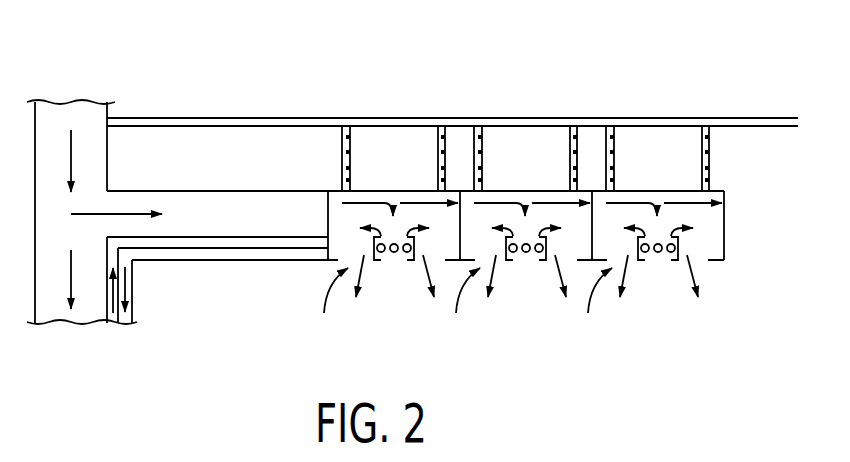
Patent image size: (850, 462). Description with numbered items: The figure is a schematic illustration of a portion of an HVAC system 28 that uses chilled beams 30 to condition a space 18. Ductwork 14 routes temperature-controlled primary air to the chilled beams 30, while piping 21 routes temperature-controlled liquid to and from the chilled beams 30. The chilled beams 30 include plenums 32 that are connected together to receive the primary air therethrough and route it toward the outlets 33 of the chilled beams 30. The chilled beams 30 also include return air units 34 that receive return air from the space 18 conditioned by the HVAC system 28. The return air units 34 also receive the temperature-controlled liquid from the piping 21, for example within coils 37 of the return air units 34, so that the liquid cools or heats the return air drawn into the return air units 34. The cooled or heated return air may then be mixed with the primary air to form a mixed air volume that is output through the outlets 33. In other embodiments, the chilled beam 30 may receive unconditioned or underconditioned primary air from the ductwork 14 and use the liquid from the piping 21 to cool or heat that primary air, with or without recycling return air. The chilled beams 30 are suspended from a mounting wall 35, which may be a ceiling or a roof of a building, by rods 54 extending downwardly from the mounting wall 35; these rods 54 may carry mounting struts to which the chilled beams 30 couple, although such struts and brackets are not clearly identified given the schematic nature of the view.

The ductwork 14 is at (107, 168).
The space 18 is at (636, 380).
The piping 21 is at (210, 250).
The HVAC system 28 is at (674, 69).
The chilled beam 30 is at (420, 191).
The plenum 32 is at (732, 190).
The outlet 33 is at (470, 300).
The return air unit 34 is at (411, 263).
The mounting wall 35 is at (306, 122).
The coil 37 is at (384, 263).
The rod 54 is at (438, 153).